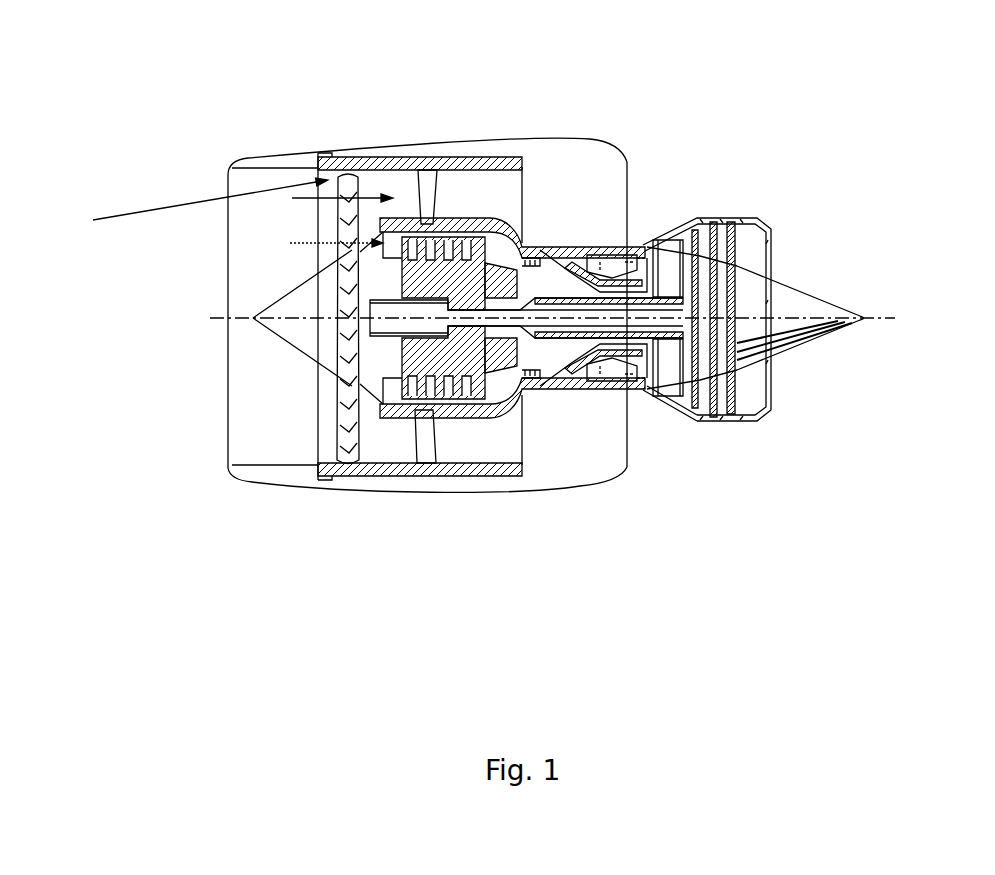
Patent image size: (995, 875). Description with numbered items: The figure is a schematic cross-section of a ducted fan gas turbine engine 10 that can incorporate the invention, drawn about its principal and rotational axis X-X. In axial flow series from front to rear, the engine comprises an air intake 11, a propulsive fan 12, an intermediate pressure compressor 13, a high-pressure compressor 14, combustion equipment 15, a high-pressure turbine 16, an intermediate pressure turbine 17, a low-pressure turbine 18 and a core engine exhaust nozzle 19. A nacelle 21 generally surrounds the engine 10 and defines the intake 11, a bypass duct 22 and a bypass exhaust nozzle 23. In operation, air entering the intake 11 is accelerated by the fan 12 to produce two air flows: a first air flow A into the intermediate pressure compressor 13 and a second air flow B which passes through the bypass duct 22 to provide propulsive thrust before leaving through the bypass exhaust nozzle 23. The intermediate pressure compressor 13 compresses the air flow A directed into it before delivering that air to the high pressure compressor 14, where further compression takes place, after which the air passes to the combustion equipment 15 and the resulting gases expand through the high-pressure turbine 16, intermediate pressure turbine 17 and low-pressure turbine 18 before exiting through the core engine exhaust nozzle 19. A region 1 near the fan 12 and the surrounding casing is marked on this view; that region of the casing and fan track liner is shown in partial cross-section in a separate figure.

The region 1 is at (195, 205).
The ducted fan gas turbine engine 10 is at (285, 120).
The air intake 11 is at (278, 167).
The propulsive fan 12 is at (337, 421).
The intermediate pressure compressor 13 is at (456, 400).
The high-pressure compressor 14 is at (545, 258).
The combustion equipment 15 is at (583, 380).
The high-pressure turbine 16 is at (643, 381).
The intermediate pressure turbine 17 is at (677, 240).
The low-pressure turbine 18 is at (690, 412).
The core engine exhaust nozzle 19 is at (765, 218).
The nacelle 21 is at (430, 140).
The bypass duct 22 is at (601, 200).
The bypass exhaust nozzle 23 is at (614, 163).